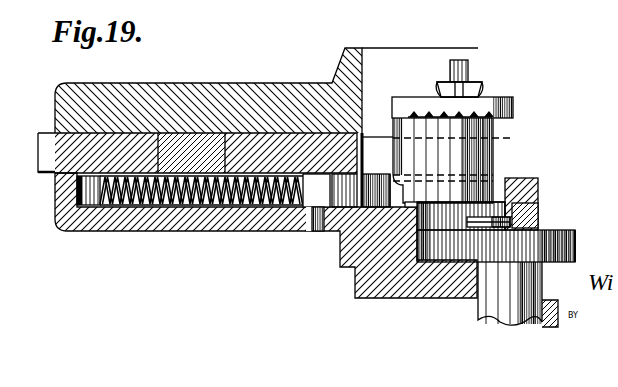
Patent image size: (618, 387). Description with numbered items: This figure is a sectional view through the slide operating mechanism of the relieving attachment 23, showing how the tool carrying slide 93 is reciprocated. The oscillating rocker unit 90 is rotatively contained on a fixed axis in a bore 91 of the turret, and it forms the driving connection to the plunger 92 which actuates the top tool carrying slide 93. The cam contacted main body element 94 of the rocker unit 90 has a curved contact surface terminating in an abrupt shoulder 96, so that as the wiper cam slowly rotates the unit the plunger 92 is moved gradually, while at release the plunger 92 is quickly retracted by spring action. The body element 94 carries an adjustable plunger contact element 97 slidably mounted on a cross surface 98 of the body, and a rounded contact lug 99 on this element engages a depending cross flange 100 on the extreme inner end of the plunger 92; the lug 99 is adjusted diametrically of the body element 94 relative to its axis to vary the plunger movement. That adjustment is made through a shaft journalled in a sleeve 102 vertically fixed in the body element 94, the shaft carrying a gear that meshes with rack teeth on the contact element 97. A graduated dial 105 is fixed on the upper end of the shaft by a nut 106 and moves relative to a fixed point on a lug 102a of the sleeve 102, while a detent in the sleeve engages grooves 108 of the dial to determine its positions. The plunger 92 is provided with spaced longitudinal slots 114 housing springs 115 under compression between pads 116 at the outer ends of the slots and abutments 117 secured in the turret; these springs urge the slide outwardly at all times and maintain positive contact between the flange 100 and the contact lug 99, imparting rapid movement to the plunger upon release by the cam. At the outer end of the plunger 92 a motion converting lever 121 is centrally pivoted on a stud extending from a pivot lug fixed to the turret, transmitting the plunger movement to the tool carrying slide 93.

The relieving attachment 23 is at (308, 80).
The plunger 92 is at (110, 128).
The tool carrying slide 93 is at (287, 74).
The motion converting lever 121 is at (188, 142).
The pads 116 is at (93, 208).
The springs 115 is at (142, 208).
The longitudinal slots 114 is at (187, 208).
The abutments 117 is at (315, 200).
The sleeve 102 is at (480, 155).
The lug 102a is at (392, 102).
The graduated dial 105 is at (512, 99).
The nut 106 is at (476, 88).
The grooves 108 is at (455, 119).
The main body element 94 is at (517, 185).
The contact lug 99 is at (528, 197).
The rocker unit 90 is at (562, 264).
The cross flange 100 is at (530, 217).
The abrupt shoulder 96 is at (577, 230).
The cross surface 98 is at (492, 220).
The plunger contact element 97 is at (501, 222).
The bore 91 is at (487, 305).